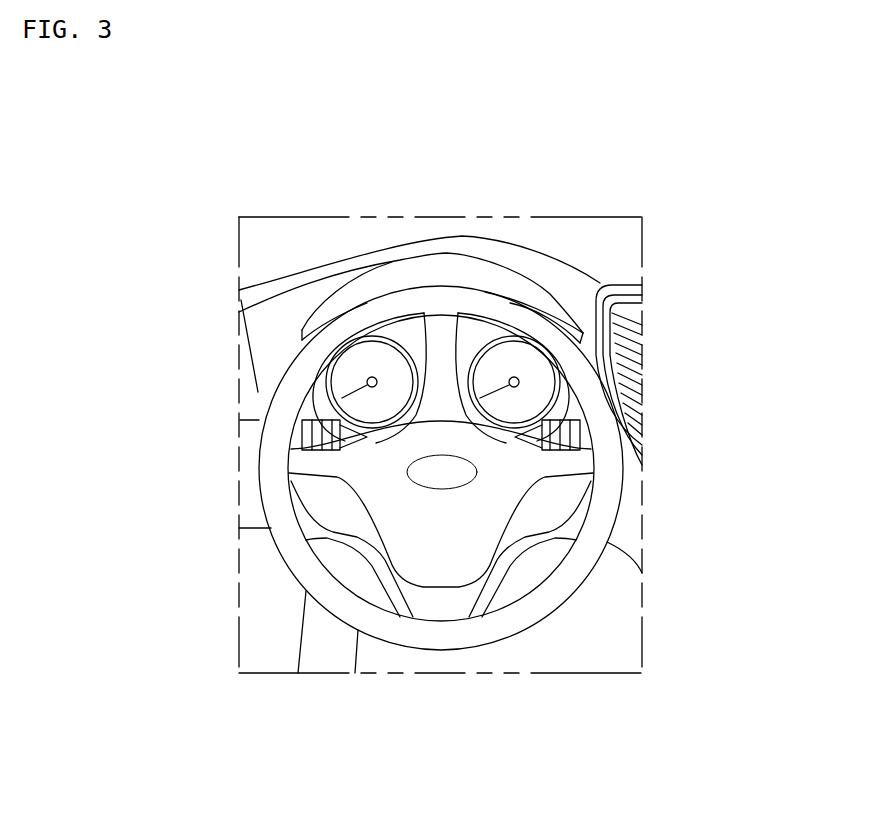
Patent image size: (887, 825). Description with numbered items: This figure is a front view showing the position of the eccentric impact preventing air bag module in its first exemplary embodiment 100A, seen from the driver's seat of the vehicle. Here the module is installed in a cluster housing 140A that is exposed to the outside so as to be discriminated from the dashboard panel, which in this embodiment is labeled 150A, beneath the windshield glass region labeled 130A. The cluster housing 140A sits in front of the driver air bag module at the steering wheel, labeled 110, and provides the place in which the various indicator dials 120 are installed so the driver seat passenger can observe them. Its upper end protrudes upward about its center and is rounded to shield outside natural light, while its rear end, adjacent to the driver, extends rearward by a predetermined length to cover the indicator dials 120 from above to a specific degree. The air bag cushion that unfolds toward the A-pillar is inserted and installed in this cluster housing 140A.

The first exemplary embodiment of the eccentric impact preventing air bag module 100A is at (298, 278).
The steering wheel 110 is at (607, 470).
The indicator dials 120 is at (518, 381).
The dashboard 130A is at (580, 246).
The cluster housing 140A is at (397, 278).
The dashboard rim 150A is at (487, 249).